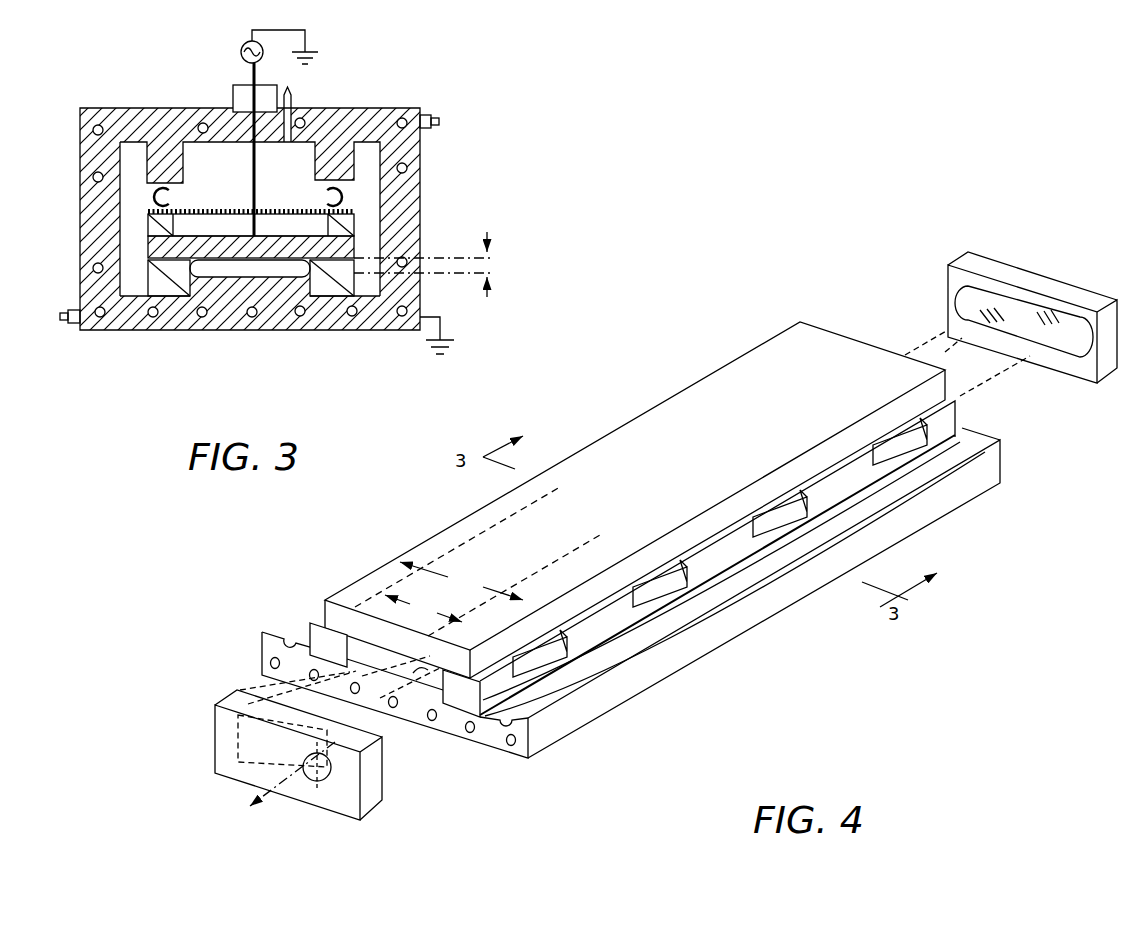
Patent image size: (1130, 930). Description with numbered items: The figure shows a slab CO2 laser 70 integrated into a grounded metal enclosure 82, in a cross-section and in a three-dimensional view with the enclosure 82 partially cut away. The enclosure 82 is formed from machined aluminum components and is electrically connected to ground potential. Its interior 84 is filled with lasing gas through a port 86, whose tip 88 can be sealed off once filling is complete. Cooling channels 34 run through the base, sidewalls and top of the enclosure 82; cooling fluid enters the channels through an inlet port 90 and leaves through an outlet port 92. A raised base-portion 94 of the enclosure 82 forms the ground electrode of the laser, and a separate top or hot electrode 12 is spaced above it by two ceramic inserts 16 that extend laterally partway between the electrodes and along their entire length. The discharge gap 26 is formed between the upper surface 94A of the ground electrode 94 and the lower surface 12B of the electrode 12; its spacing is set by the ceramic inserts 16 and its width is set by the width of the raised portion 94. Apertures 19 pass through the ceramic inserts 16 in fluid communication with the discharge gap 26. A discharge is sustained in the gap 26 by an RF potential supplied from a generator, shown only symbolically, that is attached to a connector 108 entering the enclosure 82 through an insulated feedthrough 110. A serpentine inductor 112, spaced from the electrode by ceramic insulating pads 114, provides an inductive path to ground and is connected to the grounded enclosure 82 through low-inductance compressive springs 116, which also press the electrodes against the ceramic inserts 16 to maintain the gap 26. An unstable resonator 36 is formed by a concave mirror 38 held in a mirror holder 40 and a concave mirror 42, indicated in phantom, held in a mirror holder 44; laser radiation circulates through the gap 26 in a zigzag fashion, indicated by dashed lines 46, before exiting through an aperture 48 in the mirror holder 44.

In FIG. 3, the top electrode 12 is at (360, 238).
In FIG. 4, the top electrode 12 is at (604, 436).
In FIG. 3, the lower surface of electrode 12B is at (322, 292).
In FIG. 3, the ceramic inserts 16 is at (138, 265).
In FIG. 4, the ceramic inserts 16 is at (301, 636).
In FIG. 4, the apertures 19 is at (667, 586).
In FIG. 4, the discharge gap 26 is at (423, 672).
In FIG. 3, the cooling channels 34 is at (203, 318).
In FIG. 4, the cooling channels 34 is at (271, 661).
In FIG. 4, the unstable resonator 36 is at (970, 367).
In FIG. 4, the concave mirror 38 is at (962, 307).
In FIG. 4, the mirror holder 40 is at (1037, 368).
In FIG. 4, the concave mirror 42 is at (232, 736).
In FIG. 4, the mirror holder 44 is at (218, 771).
In FIG. 4, the dashed lines 46 is at (312, 702).
In FIG. 4, the aperture 48 is at (320, 784).
In FIG. 3, the slab CO2 laser 70 is at (310, 414).
In FIG. 4, the slab CO2 laser 70 is at (843, 735).
In FIG. 3, the metal enclosure 82 is at (428, 186).
In FIG. 4, the metal enclosure 82 is at (618, 707).
In FIG. 3, the interior of enclosure 84 is at (232, 183).
In FIG. 3, the port 86 is at (296, 116).
In FIG. 3, the tip of port 88 is at (288, 100).
In FIG. 3, the inlet port 90 is at (70, 323).
In FIG. 3, the outlet port 92 is at (438, 120).
In FIG. 3, the raised base-portion 94 is at (285, 281).
In FIG. 4, the raised base-portion 94 is at (410, 690).
In FIG. 3, the upper surface of ground electrode 94A is at (230, 279).
In FIG. 3, the connector 108 is at (254, 165).
In FIG. 3, the insulated feedthrough 110 is at (250, 100).
In FIG. 3, the serpentine inductor 112 is at (150, 216).
In FIG. 3, the ceramic insulating pads 114 is at (165, 224).
In FIG. 3, the compressive springs 116 is at (155, 192).